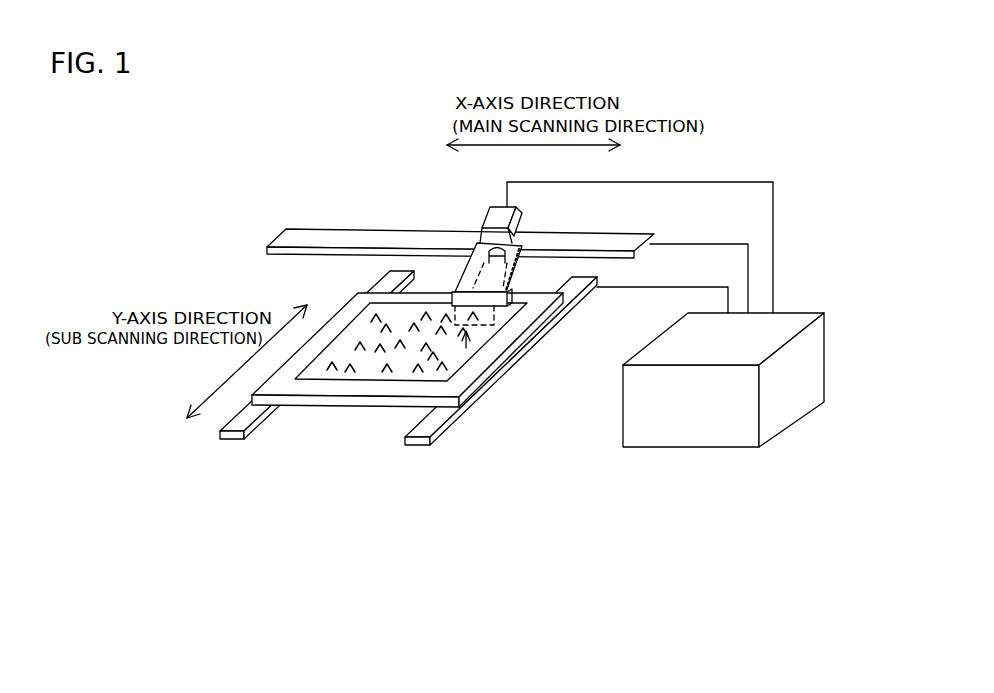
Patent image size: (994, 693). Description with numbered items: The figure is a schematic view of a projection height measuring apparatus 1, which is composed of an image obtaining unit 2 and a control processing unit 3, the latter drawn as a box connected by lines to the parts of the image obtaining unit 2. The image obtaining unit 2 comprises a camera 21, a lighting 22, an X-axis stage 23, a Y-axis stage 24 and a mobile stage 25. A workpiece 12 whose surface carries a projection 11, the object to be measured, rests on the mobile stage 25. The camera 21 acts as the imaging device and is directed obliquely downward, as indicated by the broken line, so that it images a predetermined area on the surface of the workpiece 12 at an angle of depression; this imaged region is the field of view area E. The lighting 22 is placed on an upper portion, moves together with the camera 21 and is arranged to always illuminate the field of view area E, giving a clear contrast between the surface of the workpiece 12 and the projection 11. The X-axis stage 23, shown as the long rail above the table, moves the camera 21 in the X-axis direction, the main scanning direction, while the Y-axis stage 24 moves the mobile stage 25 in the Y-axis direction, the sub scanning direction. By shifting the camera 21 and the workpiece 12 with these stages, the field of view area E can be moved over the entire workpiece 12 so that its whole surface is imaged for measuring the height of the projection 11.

The projection height measuring apparatus 1 is at (748, 106).
The image obtaining unit 2 is at (359, 545).
The control processing unit 3 is at (688, 518).
The projection 11 is at (466, 348).
The workpiece 12 is at (365, 322).
The camera 21 is at (493, 218).
The lighting 22 is at (447, 295).
The X-axis stage 23 is at (305, 238).
The Y-axis stage 24 is at (235, 438).
The mobile stage 25 is at (340, 402).
The field of view area E is at (487, 322).